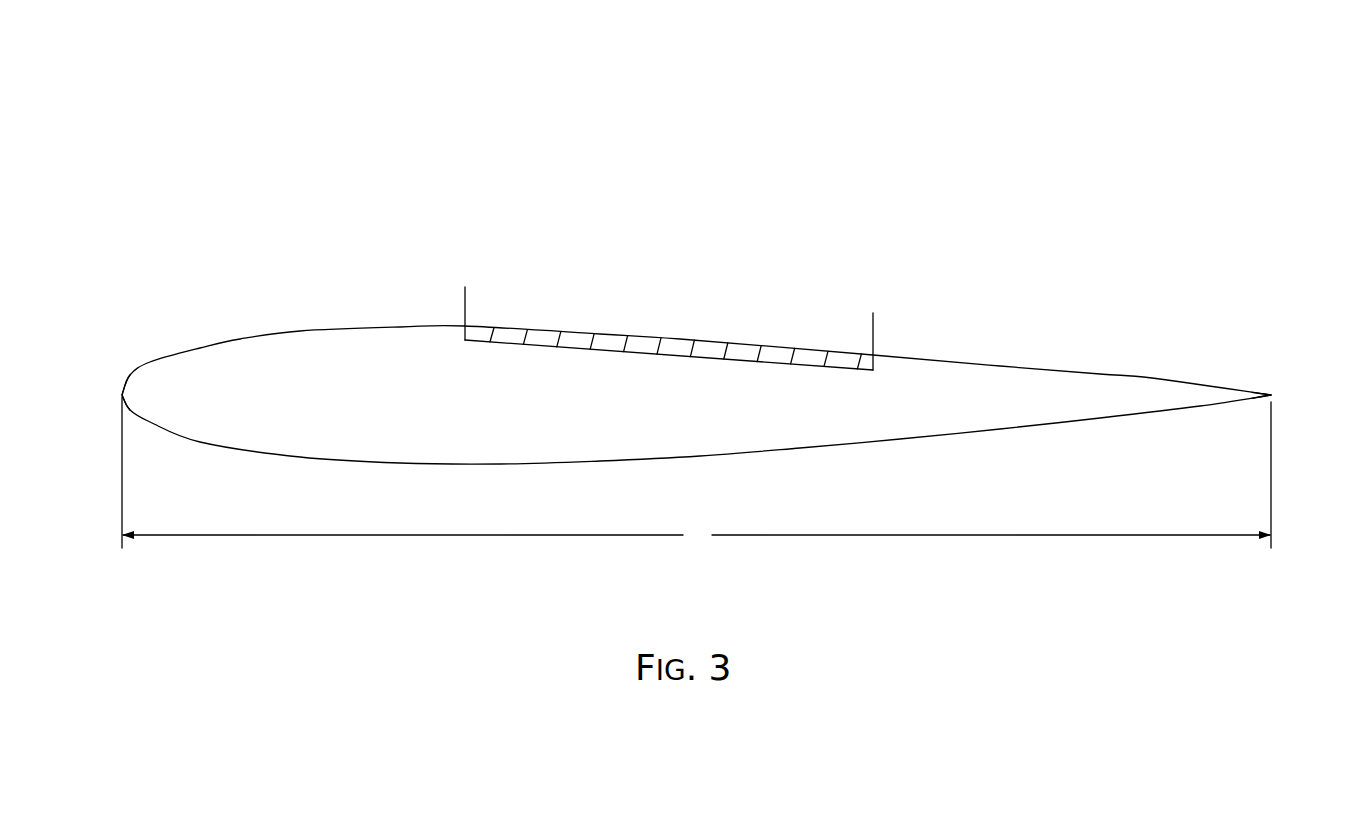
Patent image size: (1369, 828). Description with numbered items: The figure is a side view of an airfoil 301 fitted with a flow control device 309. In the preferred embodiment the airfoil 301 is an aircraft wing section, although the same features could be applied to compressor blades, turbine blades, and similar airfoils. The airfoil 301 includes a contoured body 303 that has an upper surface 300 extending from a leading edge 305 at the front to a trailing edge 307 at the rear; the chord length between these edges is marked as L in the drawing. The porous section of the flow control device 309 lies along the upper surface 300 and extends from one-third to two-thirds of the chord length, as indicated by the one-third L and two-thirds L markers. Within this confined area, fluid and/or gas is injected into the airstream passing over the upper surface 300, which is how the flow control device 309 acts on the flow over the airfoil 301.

The upper surface 300 is at (702, 345).
The airfoil 301 is at (702, 304).
The contoured body 303 is at (335, 328).
The leading edge 305 is at (122, 394).
The trailing edge 307 is at (1273, 392).
The flow control device 309 is at (662, 305).